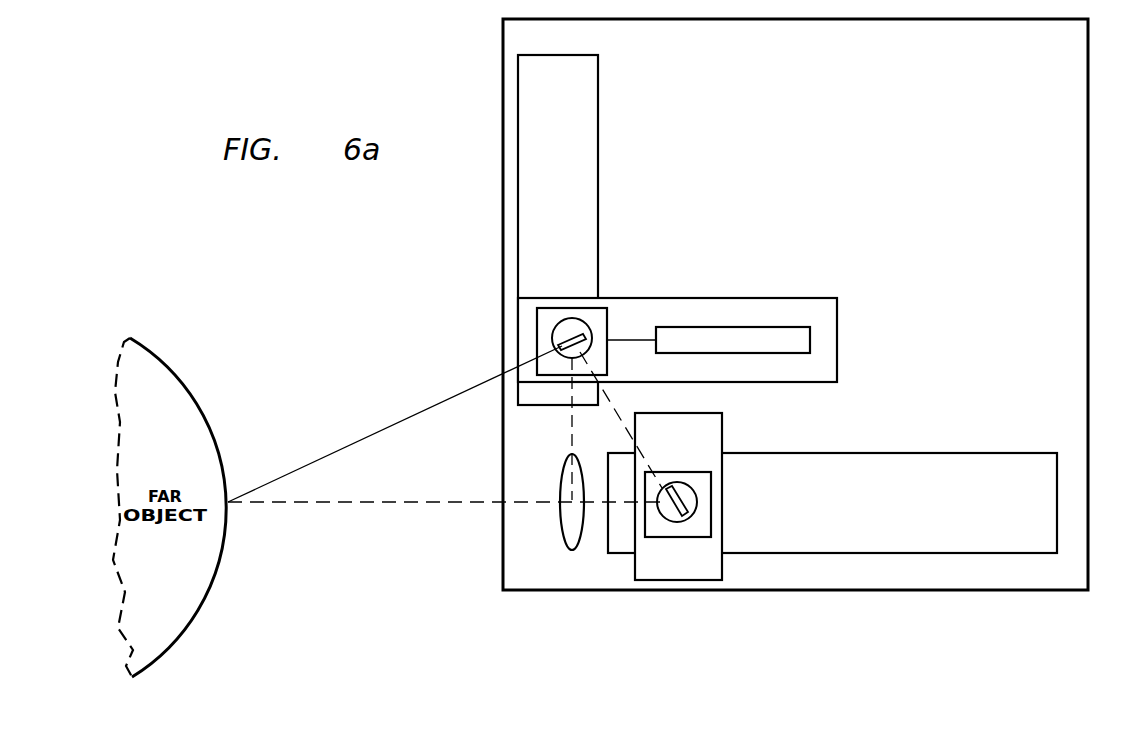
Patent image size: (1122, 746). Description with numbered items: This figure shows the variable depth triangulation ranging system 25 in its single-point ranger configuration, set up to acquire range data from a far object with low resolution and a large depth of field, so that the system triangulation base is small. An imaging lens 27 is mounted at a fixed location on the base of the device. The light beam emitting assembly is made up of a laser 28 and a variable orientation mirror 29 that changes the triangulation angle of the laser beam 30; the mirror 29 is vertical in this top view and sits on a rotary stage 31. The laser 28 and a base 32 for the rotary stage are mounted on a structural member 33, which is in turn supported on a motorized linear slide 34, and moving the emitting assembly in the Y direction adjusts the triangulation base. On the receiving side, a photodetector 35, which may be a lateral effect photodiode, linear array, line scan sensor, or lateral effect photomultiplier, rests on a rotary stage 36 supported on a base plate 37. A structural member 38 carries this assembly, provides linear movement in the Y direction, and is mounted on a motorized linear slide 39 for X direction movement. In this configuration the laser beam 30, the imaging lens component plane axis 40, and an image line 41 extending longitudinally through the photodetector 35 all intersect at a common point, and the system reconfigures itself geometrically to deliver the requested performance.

The variable depth triangulation ranging system 25 is at (812, 610).
The imaging lens 27 is at (568, 520).
The laser 28 is at (772, 327).
The variable orientation mirror 29 is at (555, 323).
The laser beam 30 is at (366, 434).
The rotary stage 31 is at (553, 345).
The base 32 is at (548, 306).
The structural member 33 is at (672, 298).
The motorized linear slide 34 is at (600, 135).
The photodetector 35 is at (697, 500).
The rotary stage 36 is at (657, 512).
The base plate 37 is at (660, 537).
The structural member 38 is at (722, 436).
The motorized linear slide 39 is at (965, 457).
The imaging lens component plane axis 40 is at (572, 426).
The image line 41 is at (607, 400).